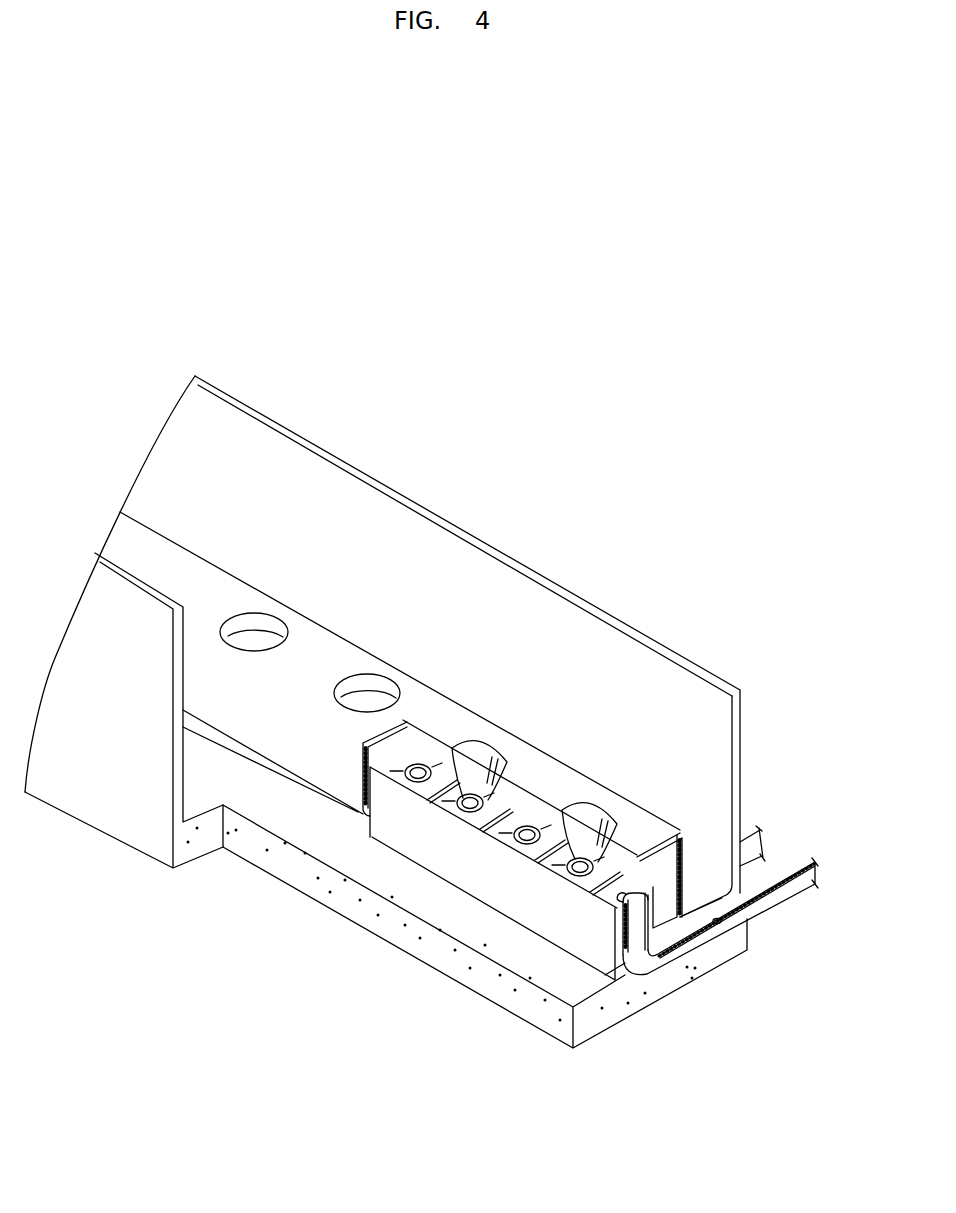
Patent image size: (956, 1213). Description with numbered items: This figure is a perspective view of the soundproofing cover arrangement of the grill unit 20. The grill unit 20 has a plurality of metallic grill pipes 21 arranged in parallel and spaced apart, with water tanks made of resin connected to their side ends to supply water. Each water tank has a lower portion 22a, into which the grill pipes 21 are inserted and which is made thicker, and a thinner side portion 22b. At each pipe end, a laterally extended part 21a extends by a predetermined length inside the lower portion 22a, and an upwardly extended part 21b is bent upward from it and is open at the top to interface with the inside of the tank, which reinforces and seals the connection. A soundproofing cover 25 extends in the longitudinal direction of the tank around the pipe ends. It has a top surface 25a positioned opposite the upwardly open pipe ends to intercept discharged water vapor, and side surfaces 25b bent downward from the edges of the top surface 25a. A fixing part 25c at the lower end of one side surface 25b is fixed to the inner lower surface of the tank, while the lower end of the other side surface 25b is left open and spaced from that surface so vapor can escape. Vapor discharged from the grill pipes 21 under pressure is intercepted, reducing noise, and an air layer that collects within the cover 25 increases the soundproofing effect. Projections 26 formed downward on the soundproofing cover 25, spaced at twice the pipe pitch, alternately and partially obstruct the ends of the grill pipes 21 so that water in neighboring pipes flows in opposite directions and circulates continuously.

The grill unit 20 is at (566, 568).
The grill pipe 21 is at (790, 917).
The laterally extended part 21a is at (677, 968).
The upwardly extended part 21b is at (604, 978).
The lower portion 22a is at (622, 1010).
The side portion 22b is at (173, 762).
The soundproofing cover 25 is at (320, 648).
The top surface 25a is at (658, 842).
The side surface 25b is at (679, 866).
The fixing part 25c is at (717, 925).
The projection 26 is at (479, 806).